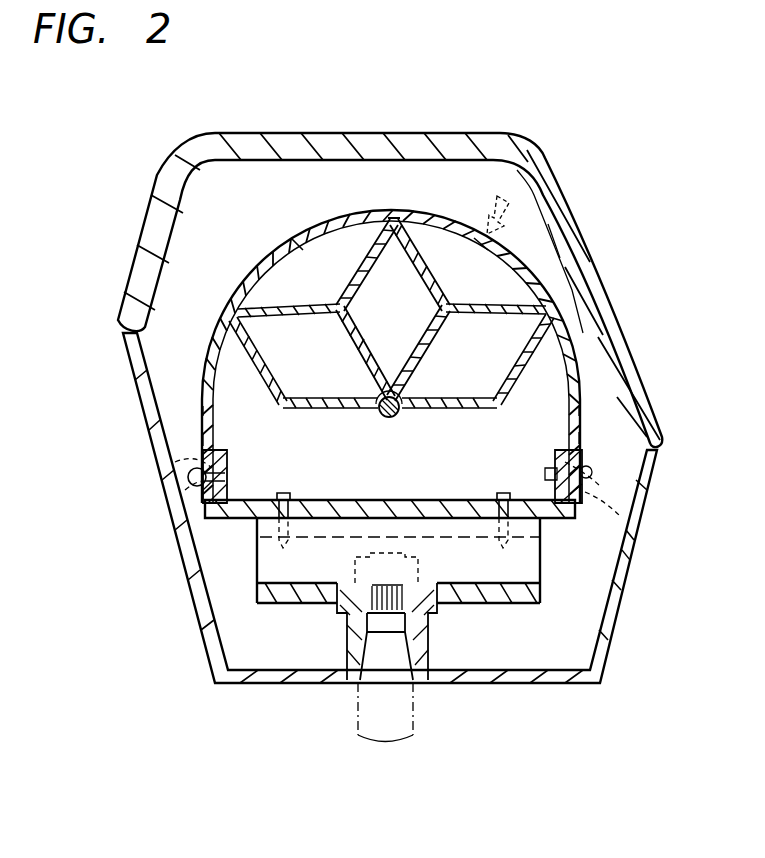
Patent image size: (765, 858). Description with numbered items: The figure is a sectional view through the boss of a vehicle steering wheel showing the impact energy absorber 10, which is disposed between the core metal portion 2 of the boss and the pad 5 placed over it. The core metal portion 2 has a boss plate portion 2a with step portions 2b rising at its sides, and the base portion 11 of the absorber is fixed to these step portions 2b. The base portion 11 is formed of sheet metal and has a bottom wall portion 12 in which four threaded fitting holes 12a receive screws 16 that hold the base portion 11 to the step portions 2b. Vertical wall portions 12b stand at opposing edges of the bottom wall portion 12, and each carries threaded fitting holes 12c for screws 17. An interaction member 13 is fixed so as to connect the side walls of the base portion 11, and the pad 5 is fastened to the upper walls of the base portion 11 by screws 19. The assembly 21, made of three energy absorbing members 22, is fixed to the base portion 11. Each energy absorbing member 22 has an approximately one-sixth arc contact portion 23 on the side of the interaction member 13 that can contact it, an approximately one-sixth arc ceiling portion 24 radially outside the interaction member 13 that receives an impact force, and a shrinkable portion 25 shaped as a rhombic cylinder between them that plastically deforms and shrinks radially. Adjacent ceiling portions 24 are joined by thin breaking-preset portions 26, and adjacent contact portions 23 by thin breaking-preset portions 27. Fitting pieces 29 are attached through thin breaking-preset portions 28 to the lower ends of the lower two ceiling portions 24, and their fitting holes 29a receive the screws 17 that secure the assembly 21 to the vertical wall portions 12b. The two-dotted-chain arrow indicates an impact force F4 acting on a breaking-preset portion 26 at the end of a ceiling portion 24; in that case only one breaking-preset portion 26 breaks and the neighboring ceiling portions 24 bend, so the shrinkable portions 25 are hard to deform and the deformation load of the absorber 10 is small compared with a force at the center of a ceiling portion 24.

The core metal portion 2 is at (512, 623).
The boss plate portion 2a is at (538, 598).
The step portion 2b is at (532, 528).
The pad 5 is at (232, 137).
The impact energy absorber 10 is at (538, 243).
The base portion 11 is at (583, 531).
The bottom wall portion 12 is at (356, 500).
The fitting hole 12a is at (283, 494).
The vertical wall portion 12b is at (212, 450).
The fitting hole 12c is at (175, 462).
The interaction member 13 is at (392, 418).
The screw 16 is at (283, 548).
The screw 17 is at (197, 485).
The screw 19 is at (203, 440).
The assembly 21 is at (528, 220).
The energy absorbing member 22 is at (356, 200).
The contact portion 23 is at (397, 378).
The ceiling portion 24 is at (330, 228).
The shrinkable portion 25 is at (268, 302).
The breaking-preset portion 26 is at (298, 243).
The breaking-preset portion 27 is at (376, 406).
The breaking-preset portion 28 is at (203, 408).
The fitting piece 29 is at (582, 438).
The fitting hole 29a is at (185, 490).
The impact force F4 is at (490, 204).